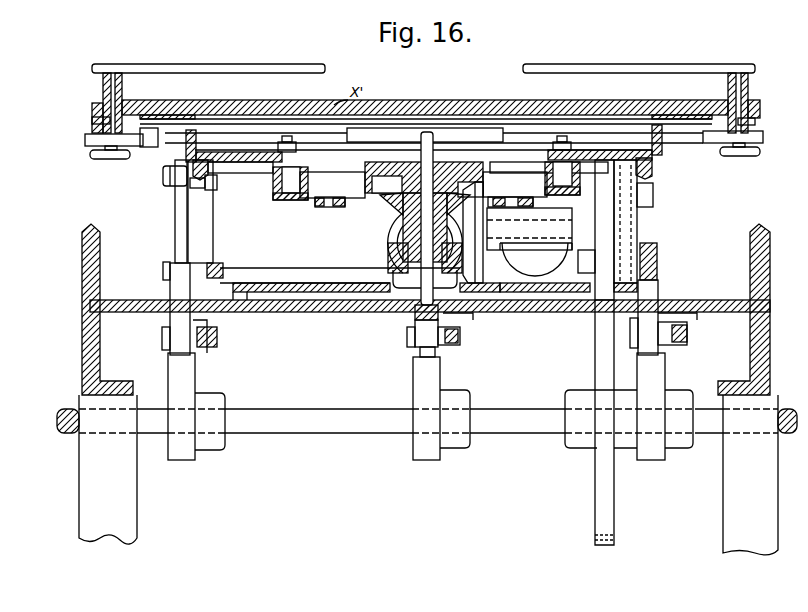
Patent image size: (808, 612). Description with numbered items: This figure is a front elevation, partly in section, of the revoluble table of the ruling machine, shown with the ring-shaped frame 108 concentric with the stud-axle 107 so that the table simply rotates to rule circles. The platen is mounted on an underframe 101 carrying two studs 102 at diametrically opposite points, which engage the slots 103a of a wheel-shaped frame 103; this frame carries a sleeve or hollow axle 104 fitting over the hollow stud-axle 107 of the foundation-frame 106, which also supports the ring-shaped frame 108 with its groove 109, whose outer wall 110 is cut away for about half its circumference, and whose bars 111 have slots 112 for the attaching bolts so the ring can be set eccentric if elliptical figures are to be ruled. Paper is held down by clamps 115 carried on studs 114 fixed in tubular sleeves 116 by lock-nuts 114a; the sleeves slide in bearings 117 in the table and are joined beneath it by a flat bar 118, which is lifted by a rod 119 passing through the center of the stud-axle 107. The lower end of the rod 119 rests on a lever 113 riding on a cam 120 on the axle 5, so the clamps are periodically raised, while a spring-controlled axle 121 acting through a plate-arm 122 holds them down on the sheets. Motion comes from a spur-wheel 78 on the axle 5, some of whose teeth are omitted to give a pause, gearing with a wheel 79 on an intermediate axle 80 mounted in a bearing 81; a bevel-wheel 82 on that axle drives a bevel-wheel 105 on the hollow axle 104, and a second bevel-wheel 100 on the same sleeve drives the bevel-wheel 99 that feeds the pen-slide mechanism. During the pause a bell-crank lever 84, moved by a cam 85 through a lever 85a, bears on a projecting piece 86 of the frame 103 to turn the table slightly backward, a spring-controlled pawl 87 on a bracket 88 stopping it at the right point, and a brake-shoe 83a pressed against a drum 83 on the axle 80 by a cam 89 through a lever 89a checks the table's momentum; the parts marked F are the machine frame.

The axle 5 is at (427, 420).
The spur-wheel 78 is at (596, 492).
The spur-wheel 79 is at (596, 230).
The axle 80 is at (534, 241).
The bearing 81 is at (529, 229).
The bevel-wheel 82 is at (478, 263).
The drum 83 is at (625, 226).
The brake-shoe 83a is at (640, 179).
The bell-crank lever 84 is at (175, 222).
The cam 85 is at (196, 406).
The lever 85a is at (172, 290).
The projecting piece 86 is at (197, 189).
The spring-controlled pawl 87 is at (170, 187).
The bracket 88 is at (213, 243).
The cam 89 is at (629, 406).
The lever 89a is at (658, 289).
The bevel-wheel 99 is at (400, 233).
The bevel-wheel 100 is at (398, 207).
The underframe 101 is at (227, 160).
The stud 102 is at (430, 177).
The wheel-shaped frame 103 is at (209, 174).
The slot 103a is at (408, 167).
The hollow axle 104 is at (401, 230).
The bevel-wheel 105 is at (386, 182).
The foundation-frame 106 is at (352, 283).
The hollow stud-axle 107 is at (398, 256).
The ring-shaped frame 108 is at (423, 185).
The groove 109 is at (298, 200).
The outer wall 110 is at (274, 191).
The bar 111 is at (346, 200).
The slot 112 is at (320, 205).
The lever 113 is at (415, 322).
The stud 114 is at (118, 85).
The lock-nut 114a is at (98, 166).
The clamp 115 is at (208, 73).
The tubular sleeve 116 is at (103, 98).
The bearing 117 is at (92, 121).
The flat bar 118 is at (195, 138).
The rod 119 is at (421, 149).
The cam 120 is at (440, 372).
The spring-controlled axle 121 is at (320, 135).
The plate-arm 122 is at (358, 126).
The frame F is at (98, 336).